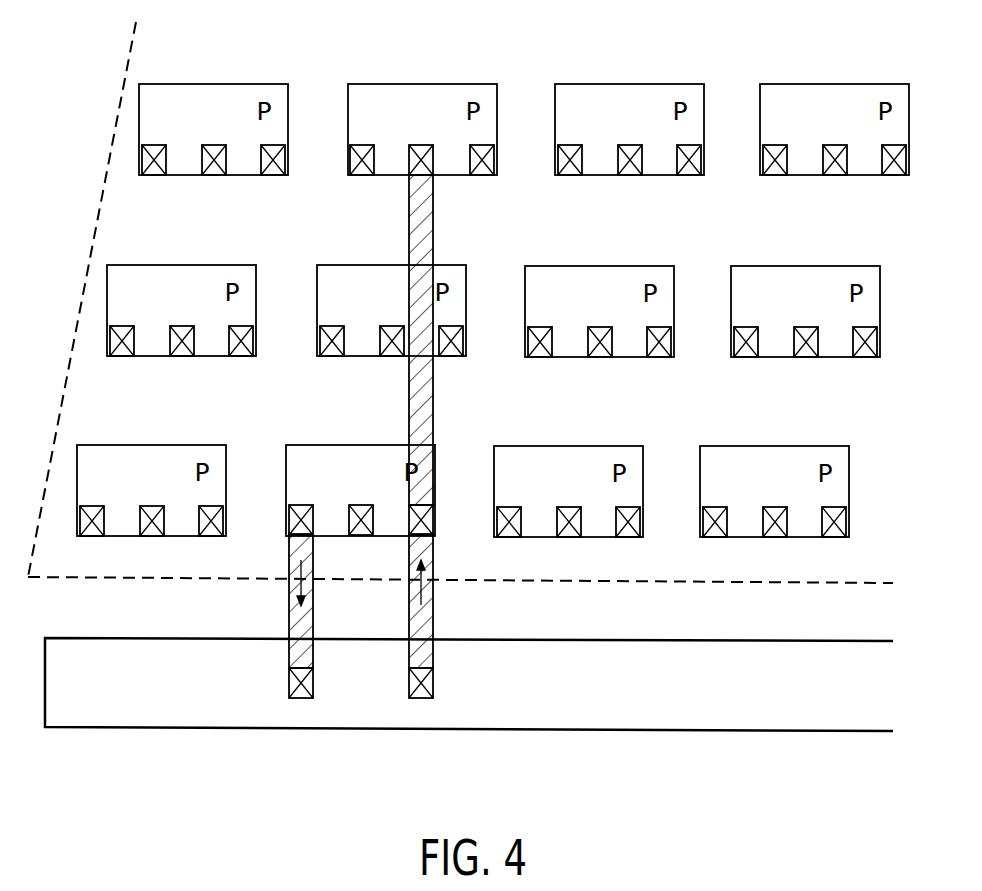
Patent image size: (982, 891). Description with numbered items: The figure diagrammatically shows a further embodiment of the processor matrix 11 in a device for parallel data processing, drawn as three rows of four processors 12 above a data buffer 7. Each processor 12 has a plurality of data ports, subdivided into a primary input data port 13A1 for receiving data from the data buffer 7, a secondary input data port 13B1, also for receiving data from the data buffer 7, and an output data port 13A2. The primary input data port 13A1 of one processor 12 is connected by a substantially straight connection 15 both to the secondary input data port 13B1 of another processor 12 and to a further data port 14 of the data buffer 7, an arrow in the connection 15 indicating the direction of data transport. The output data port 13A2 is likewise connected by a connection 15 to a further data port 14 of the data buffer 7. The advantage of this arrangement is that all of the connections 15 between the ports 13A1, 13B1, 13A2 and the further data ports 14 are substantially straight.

The data buffer 7 is at (590, 703).
The processor matrix 11 is at (118, 212).
The processor 12 is at (400, 98).
The primary input data port 13A1 is at (494, 162).
The output data port 13A2 is at (348, 162).
The secondary input data port 13B1 is at (409, 162).
The further data port 14 is at (301, 698).
The connection 15 is at (430, 225).